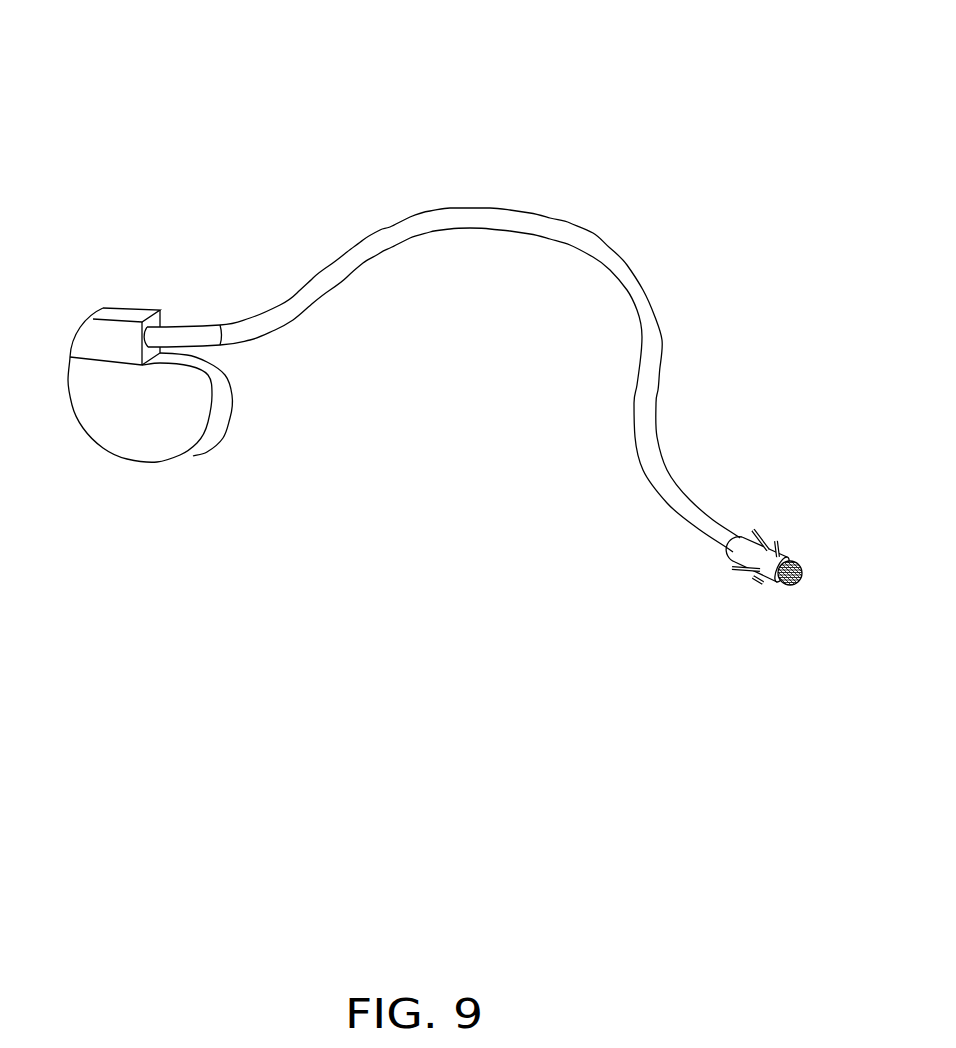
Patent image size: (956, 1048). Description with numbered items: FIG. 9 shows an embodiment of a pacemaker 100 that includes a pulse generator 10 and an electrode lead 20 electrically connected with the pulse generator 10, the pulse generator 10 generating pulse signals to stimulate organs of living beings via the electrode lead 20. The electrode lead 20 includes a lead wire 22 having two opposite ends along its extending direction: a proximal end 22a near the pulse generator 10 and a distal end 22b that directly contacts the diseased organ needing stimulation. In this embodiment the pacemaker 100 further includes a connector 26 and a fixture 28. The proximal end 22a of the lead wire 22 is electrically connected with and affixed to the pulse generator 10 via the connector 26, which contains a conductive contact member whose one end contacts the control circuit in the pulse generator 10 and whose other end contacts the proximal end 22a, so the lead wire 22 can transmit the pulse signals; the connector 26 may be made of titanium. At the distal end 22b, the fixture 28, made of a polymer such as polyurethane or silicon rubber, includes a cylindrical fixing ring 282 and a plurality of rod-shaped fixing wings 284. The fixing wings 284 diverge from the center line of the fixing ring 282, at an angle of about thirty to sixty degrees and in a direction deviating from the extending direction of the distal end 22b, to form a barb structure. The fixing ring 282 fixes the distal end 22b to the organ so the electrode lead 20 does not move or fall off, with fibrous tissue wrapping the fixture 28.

The pacemaker 100 is at (410, 52).
The pulse generator 10 is at (152, 492).
The connector 26 is at (127, 353).
The electrode lead 20 is at (488, 262).
The lead wire 22 is at (513, 220).
The proximal end 22a is at (177, 335).
The distal end 22b is at (782, 587).
The fixture 28 is at (704, 607).
The fixing ring 282 is at (740, 550).
The fixing wings 284 is at (733, 573).